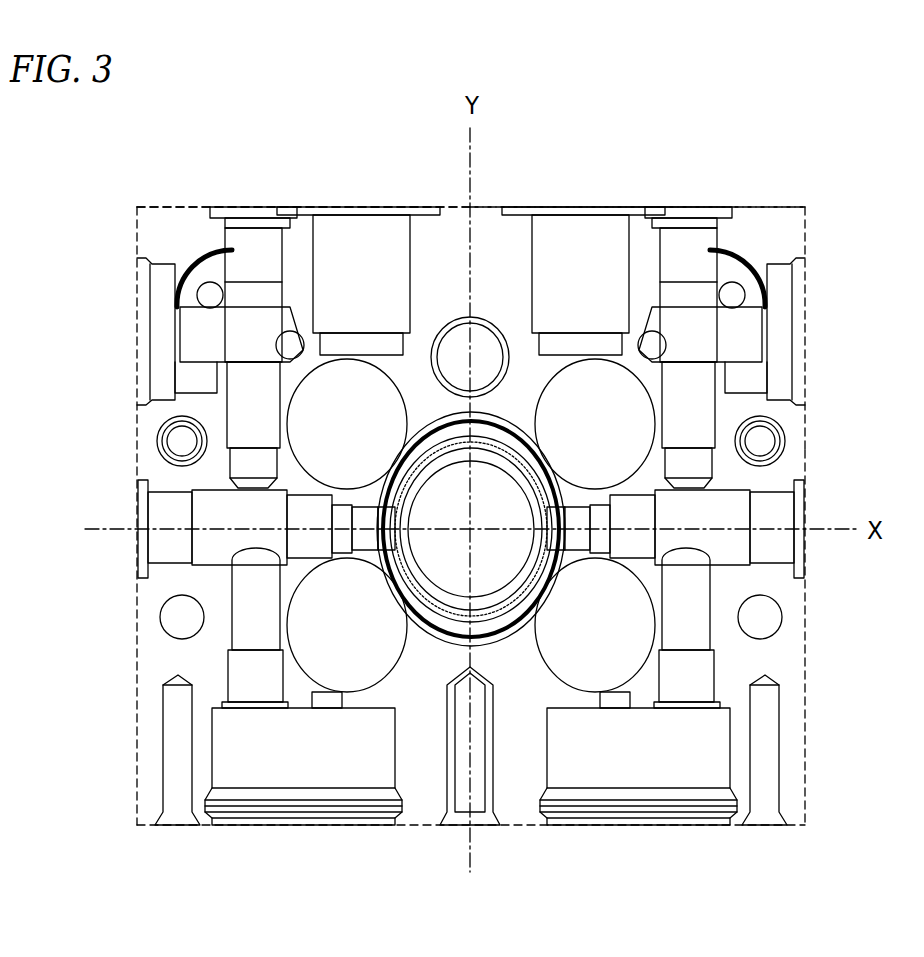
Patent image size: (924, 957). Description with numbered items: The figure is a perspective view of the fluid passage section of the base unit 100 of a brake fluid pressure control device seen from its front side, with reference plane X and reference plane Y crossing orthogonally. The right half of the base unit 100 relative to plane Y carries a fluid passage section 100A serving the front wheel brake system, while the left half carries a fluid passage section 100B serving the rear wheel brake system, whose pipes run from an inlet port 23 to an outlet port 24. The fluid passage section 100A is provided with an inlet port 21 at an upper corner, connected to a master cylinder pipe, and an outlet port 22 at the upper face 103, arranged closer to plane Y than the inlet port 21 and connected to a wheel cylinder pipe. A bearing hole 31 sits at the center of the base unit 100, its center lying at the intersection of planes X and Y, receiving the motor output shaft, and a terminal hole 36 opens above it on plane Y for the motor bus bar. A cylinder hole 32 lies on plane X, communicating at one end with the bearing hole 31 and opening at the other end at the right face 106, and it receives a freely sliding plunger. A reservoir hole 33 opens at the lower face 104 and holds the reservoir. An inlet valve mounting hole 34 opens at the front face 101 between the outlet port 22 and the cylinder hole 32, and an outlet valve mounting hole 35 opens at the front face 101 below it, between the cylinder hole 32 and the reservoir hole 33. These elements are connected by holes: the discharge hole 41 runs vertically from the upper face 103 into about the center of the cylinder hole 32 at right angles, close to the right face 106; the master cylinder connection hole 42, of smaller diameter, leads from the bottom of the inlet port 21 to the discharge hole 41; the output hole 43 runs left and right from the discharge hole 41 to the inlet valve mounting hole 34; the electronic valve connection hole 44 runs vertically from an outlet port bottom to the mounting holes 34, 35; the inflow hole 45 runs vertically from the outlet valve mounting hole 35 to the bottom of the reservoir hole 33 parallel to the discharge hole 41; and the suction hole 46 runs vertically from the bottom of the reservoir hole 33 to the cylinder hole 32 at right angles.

The base unit 100 is at (191, 203).
The fluid passage section 100A is at (753, 203).
The fluid passage section 100B is at (148, 203).
The front face 101 is at (440, 240).
The upper face 103 is at (556, 207).
The lower face 104 is at (503, 828).
The right face 106 is at (811, 443).
The inlet port 21 is at (754, 254).
The outlet port 22 is at (577, 205).
The inlet port 23 is at (182, 250).
The outlet port 24 is at (352, 205).
The bearing hole 31 is at (484, 512).
The cylinder hole 32 is at (136, 500).
The reservoir hole 33 is at (278, 830).
The inlet valve mounting hole 34 is at (332, 438).
The outlet valve mounting hole 35 is at (332, 638).
The terminal hole 36 is at (478, 316).
The discharge hole 41 is at (260, 235).
The master cylinder connection hole 42 is at (211, 290).
The output hole 43 is at (304, 338).
The electronic valve connection hole 44 is at (358, 537).
The inflow hole 45 is at (328, 696).
The suction hole 46 is at (237, 633).